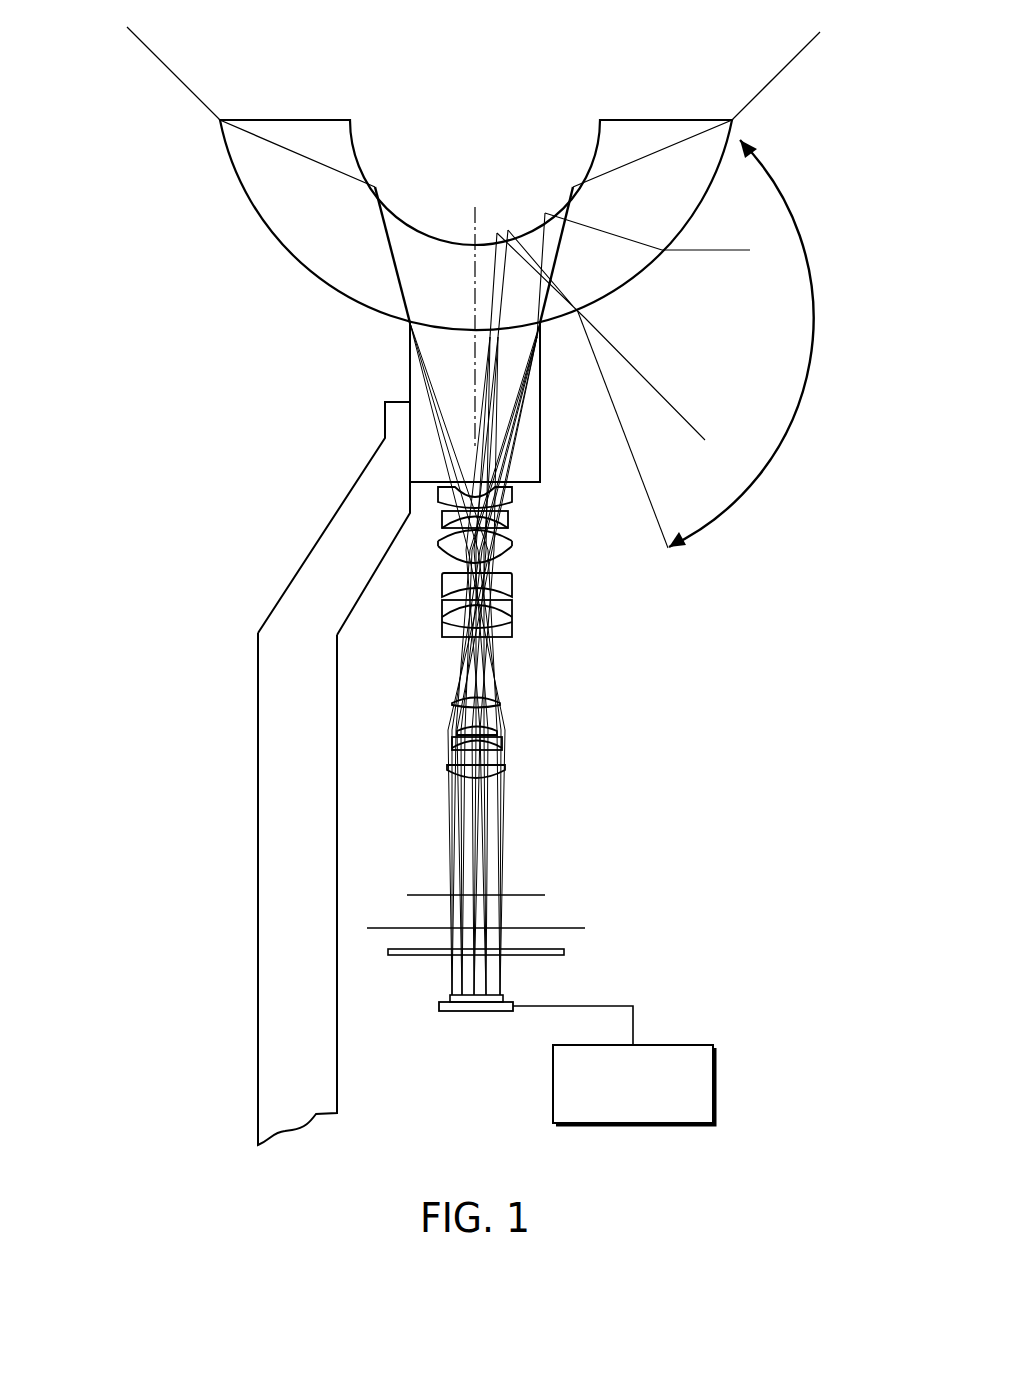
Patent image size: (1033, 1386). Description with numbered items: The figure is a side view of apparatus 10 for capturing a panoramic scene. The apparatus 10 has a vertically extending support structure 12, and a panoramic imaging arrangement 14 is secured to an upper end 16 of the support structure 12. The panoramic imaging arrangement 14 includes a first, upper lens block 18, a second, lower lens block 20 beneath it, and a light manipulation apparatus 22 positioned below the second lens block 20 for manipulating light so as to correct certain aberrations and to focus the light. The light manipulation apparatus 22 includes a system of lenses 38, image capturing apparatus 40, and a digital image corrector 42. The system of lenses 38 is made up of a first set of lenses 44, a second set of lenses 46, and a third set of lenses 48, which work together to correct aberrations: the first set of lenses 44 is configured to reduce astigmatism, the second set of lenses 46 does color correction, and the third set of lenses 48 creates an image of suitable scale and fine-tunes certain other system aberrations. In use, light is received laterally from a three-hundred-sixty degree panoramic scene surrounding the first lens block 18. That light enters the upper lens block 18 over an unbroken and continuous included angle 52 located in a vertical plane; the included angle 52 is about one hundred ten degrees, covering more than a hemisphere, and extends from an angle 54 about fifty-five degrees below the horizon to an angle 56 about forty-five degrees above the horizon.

The apparatus 10 is at (140, 142).
The support structure 12 is at (268, 718).
The panoramic imaging arrangement 14 is at (780, 492).
The upper end 16 is at (395, 420).
The first, upper lens block 18 is at (690, 200).
The second, lower lens block 20 is at (532, 445).
The light manipulation apparatus 22 is at (635, 615).
The system of lenses 38 is at (577, 572).
The image capturing apparatus 40 is at (439, 1006).
The digital image corrector 42 is at (676, 1045).
The first set of lenses 44 is at (523, 485).
The second set of lenses 46 is at (523, 567).
The third set of lenses 48 is at (513, 692).
The included angle 52 is at (800, 310).
The angle below the horizon 54 is at (628, 472).
The angle above the horizon 56 is at (777, 80).